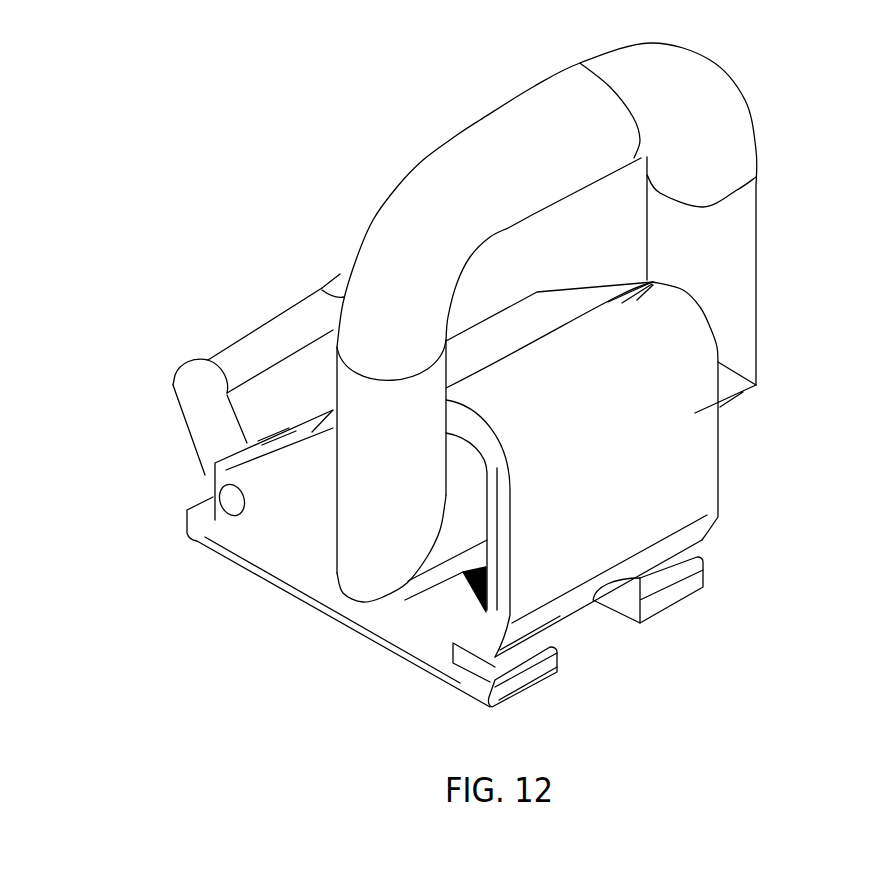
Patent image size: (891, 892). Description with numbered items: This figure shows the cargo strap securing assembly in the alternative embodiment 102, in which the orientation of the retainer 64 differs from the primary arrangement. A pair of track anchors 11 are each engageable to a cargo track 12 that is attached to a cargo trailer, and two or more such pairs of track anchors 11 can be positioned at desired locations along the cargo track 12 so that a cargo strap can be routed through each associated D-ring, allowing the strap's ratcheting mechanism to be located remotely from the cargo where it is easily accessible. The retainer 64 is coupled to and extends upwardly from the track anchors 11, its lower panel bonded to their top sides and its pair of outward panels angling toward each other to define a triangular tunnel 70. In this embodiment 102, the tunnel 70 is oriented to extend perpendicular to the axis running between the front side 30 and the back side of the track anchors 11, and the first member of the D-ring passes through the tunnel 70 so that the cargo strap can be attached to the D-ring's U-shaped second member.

The alternative embodiment 102 is at (228, 246).
The retainer 64 is at (643, 463).
The cargo track 12 is at (527, 686).
The track anchor 11 is at (310, 547).
The front side 30 is at (208, 498).
The tunnel 70 is at (463, 574).